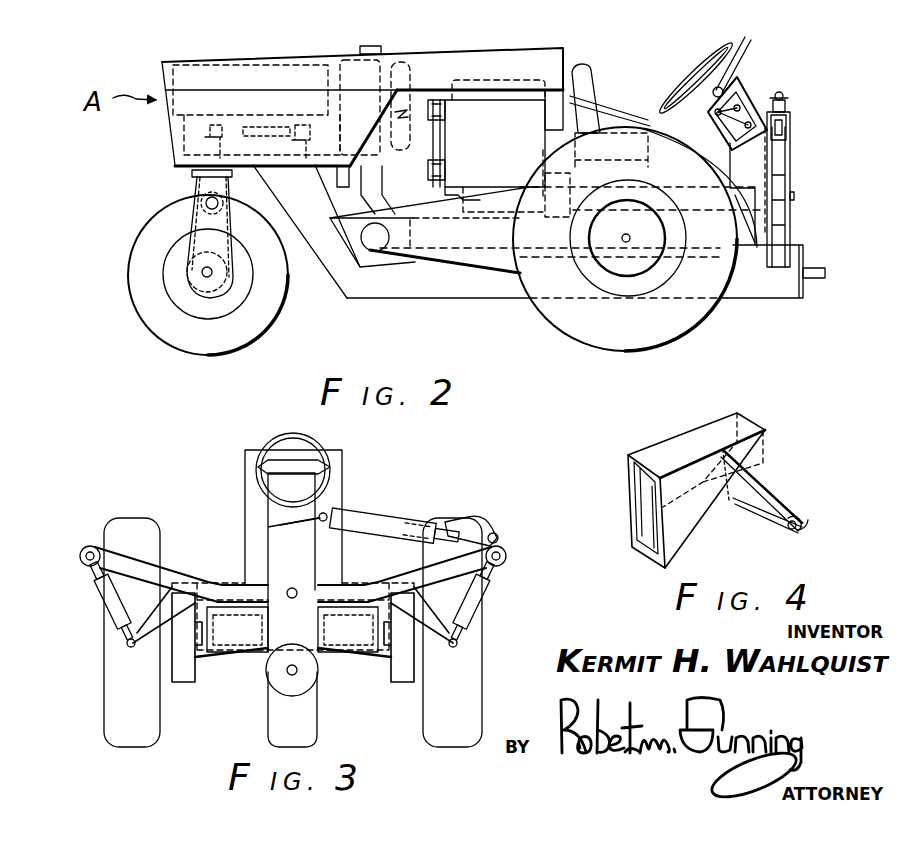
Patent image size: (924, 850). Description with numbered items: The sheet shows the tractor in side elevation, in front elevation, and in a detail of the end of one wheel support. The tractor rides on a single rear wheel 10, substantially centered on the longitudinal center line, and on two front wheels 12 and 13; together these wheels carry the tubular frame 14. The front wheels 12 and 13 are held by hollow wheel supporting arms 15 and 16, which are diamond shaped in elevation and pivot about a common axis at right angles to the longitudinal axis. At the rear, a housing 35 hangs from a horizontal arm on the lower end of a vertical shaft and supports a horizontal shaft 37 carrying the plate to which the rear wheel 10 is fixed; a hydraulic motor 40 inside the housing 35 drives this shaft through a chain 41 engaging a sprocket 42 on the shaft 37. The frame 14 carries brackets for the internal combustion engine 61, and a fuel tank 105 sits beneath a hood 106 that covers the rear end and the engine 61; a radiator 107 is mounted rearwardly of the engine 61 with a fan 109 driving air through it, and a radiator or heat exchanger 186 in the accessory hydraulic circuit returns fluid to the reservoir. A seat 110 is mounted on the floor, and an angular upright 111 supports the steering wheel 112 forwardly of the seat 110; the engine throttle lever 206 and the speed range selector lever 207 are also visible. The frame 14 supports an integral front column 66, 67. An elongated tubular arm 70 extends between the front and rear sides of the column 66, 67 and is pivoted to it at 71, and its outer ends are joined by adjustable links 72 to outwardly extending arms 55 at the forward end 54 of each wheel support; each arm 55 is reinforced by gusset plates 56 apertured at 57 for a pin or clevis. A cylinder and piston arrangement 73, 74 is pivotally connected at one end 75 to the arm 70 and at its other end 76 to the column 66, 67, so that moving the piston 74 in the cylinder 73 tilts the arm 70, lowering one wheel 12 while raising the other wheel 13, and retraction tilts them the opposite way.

In FIG. 2, the rear wheel 10 is at (153, 230).
In FIG. 3, the front wheel 12 is at (470, 672).
In FIG. 3, the front wheel 13 is at (117, 668).
In FIG. 2, the frame 14 is at (390, 304).
In FIG. 3, the wheel supporting arm 15 is at (398, 668).
In FIG. 2, the wheel supporting arm 16 is at (493, 258).
In FIG. 3, the wheel supporting arm 16 is at (186, 664).
In FIG. 2, the housing 35 is at (203, 240).
In FIG. 2, the horizontal shaft 37 is at (165, 301).
In FIG. 2, the hydraulic motor 40 is at (190, 200).
In FIG. 2, the chain 41 is at (233, 230).
In FIG. 2, the sprocket 42 is at (248, 297).
In FIG. 4, the forward end of wheel support 54 is at (709, 432).
In FIG. 3, the outwardly extending arm 55 is at (145, 630).
In FIG. 4, the outwardly extending arm 55 is at (800, 513).
In FIG. 4, the gusset plates 56 is at (768, 477).
In FIG. 4, the aperture 57 is at (793, 534).
In FIG. 2, the internal combustion engine 61 is at (488, 118).
In FIG. 3, the internal combustion engine 61 is at (251, 562).
In FIG. 2, the front column 66 is at (790, 215).
In FIG. 2, the front column 67 is at (790, 233).
In FIG. 3, the tubular arm 70 is at (488, 594).
In FIG. 3, the pivot 71 is at (288, 591).
In FIG. 3, the adjustable links 72 is at (103, 612).
In FIG. 3, the tilt cylinder 73 is at (380, 522).
In FIG. 3, the piston 74 is at (460, 520).
In FIG. 3, the pivotal connection 75 is at (500, 541).
In FIG. 3, the pivotal connection 76 is at (338, 512).
In FIG. 2, the fuel tank 105 is at (247, 64).
In FIG. 2, the hood 106 is at (225, 62).
In FIG. 2, the radiator 107 is at (389, 58).
In FIG. 2, the fan 109 is at (407, 82).
In FIG. 2, the seat 110 is at (596, 82).
In FIG. 2, the angular upright 111 is at (763, 57).
In FIG. 2, the steering wheel 112 is at (710, 63).
In FIG. 2, the radiator or heat exchanger 186 is at (353, 56).
In FIG. 2, the engine throttle lever 206 is at (787, 135).
In FIG. 2, the speed range selector lever 207 is at (737, 97).